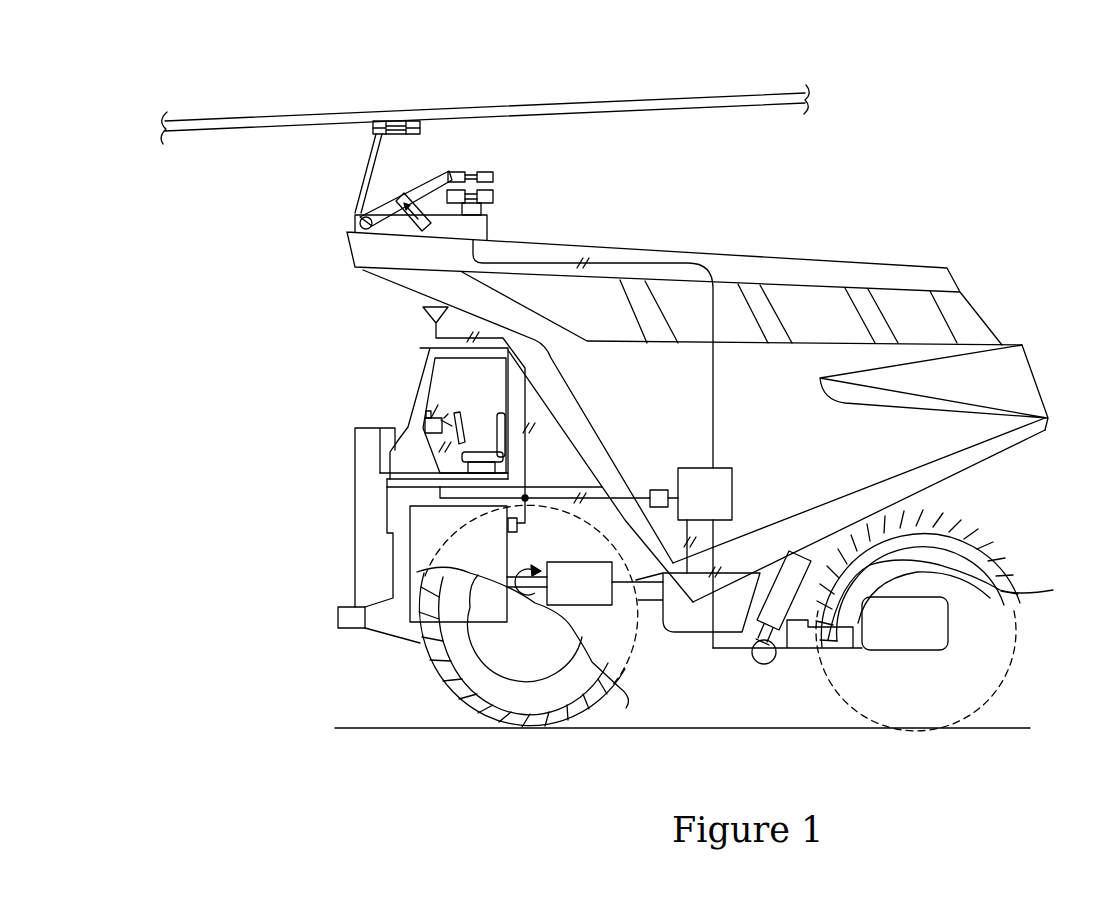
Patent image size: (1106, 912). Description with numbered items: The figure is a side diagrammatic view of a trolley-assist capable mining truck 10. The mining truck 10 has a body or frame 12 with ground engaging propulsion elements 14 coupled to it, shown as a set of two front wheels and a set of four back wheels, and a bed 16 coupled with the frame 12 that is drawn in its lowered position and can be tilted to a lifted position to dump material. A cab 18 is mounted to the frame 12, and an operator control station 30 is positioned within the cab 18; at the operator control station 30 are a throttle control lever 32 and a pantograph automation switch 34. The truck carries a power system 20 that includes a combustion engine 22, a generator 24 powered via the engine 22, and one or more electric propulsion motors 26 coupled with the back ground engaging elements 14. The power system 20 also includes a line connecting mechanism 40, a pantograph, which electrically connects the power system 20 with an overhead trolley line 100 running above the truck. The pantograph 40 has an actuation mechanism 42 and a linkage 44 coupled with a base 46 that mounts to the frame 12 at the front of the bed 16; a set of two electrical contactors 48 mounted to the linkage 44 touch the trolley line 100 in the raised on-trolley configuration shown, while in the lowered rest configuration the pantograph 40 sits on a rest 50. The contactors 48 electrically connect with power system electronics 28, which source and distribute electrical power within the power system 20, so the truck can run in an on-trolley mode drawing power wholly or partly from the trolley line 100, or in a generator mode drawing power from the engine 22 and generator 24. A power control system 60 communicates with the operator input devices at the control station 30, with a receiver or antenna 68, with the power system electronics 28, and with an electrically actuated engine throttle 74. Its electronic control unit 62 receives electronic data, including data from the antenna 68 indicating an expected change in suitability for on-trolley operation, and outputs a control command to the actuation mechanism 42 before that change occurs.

The mining truck 10 is at (999, 292).
The frame 12 is at (352, 628).
The ground engaging propulsion elements 14 is at (462, 698).
The bed 16 is at (1037, 360).
The cab 18 is at (420, 395).
The power system 20 is at (613, 590).
The combustion engine 22 is at (410, 520).
The generator 24 is at (600, 562).
The electric propulsion motors 26 is at (948, 622).
The power system electronics 28 is at (728, 468).
The operator control station 30 is at (481, 409).
The throttle control lever 32 is at (458, 412).
The pantograph automation switch 34 is at (428, 418).
The line connecting mechanism 40 is at (344, 225).
The actuation mechanism 42 is at (427, 229).
The linkage 44 is at (417, 195).
The base 46 is at (488, 228).
The electrical contactors 48 is at (483, 172).
The rest 50 is at (493, 195).
The power control system 60 is at (652, 489).
The electronic control unit 62 is at (660, 490).
The antenna 68 is at (432, 318).
The engine throttle 74 is at (517, 530).
The overhead trolley line 100 is at (193, 118).